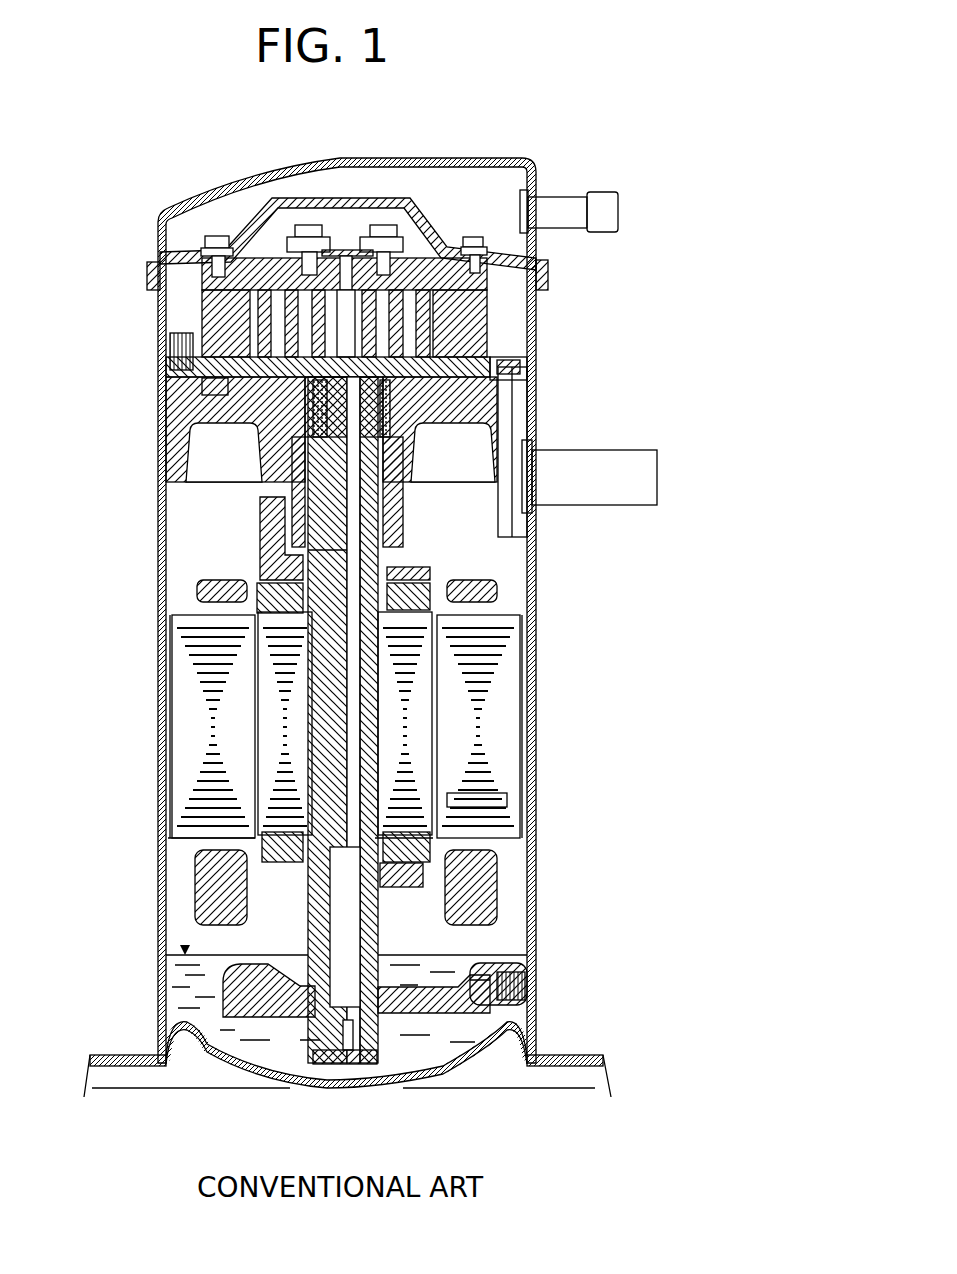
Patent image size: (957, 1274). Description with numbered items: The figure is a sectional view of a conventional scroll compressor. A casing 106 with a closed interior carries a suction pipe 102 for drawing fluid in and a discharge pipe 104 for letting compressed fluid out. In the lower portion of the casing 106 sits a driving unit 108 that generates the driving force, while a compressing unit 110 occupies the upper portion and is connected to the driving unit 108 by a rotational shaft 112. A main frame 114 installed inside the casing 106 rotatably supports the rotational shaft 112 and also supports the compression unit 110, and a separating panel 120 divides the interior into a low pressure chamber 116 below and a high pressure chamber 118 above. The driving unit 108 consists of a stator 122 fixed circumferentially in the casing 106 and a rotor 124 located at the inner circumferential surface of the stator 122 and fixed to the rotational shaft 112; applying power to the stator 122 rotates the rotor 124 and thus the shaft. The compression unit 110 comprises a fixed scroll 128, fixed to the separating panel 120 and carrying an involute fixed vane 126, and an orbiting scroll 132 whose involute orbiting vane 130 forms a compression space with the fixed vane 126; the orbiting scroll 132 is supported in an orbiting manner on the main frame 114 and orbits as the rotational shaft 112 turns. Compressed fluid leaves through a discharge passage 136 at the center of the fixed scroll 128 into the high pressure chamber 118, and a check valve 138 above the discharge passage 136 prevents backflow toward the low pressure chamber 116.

The suction pipe 102 is at (648, 478).
The discharge pipe 104 is at (604, 210).
The casing 106 is at (533, 668).
The driving unit 108 is at (195, 612).
The compressing unit 110 is at (203, 289).
The rotational shaft 112 is at (320, 800).
The main frame 114 is at (190, 415).
The low pressure chamber 116 is at (514, 276).
The high pressure chamber 118 is at (502, 180).
The separating panel 120 is at (400, 196).
The stator 122 is at (185, 688).
The rotor 124 is at (268, 745).
The fixed vane 126 is at (250, 305).
The fixed scroll 128 is at (232, 285).
The orbiting vane 130 is at (250, 345).
The orbiting scroll 132 is at (200, 375).
The discharge passage 136 is at (345, 250).
The check valve 138 is at (285, 240).